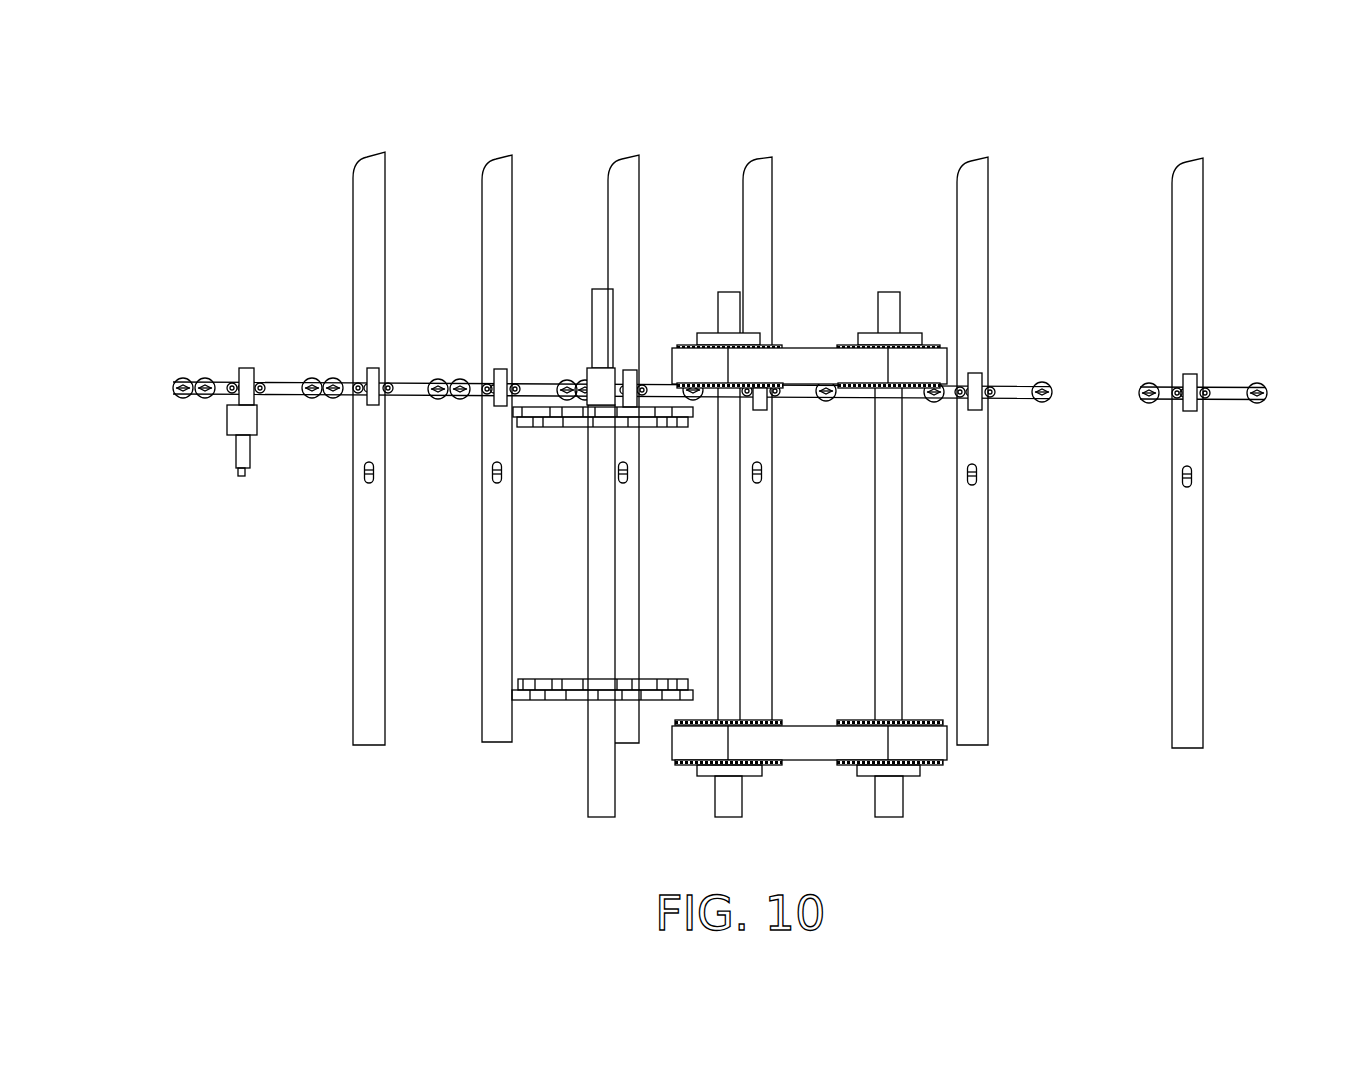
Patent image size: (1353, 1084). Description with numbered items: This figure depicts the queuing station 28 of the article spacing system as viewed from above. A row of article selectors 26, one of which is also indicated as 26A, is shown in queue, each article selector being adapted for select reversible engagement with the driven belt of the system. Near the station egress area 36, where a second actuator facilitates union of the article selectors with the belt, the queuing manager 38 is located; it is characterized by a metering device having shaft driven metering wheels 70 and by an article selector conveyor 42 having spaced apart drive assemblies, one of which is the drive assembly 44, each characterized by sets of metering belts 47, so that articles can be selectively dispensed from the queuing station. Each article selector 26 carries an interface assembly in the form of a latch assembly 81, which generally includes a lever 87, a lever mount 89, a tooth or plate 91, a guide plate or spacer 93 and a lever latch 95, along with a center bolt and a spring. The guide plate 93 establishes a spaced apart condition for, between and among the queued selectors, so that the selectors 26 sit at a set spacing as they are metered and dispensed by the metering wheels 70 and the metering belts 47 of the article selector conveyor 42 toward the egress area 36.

The article selector 26 is at (376, 211).
The paddle blade 26A is at (652, 195).
The queuing station 28 is at (303, 668).
The station egress area 36 is at (809, 411).
The queuing manager 38 is at (606, 830).
The article selector conveyor 42 is at (813, 720).
The drive assembly 44 is at (833, 768).
The metering belt 47 is at (808, 362).
The metering wheel 70 is at (573, 697).
The latch assembly 81 is at (170, 387).
The lever 87 is at (242, 455).
The lever mount 89 is at (235, 423).
The tooth or plate 91 is at (246, 368).
The guide plate 93 is at (285, 381).
The lever latch 95 is at (240, 477).